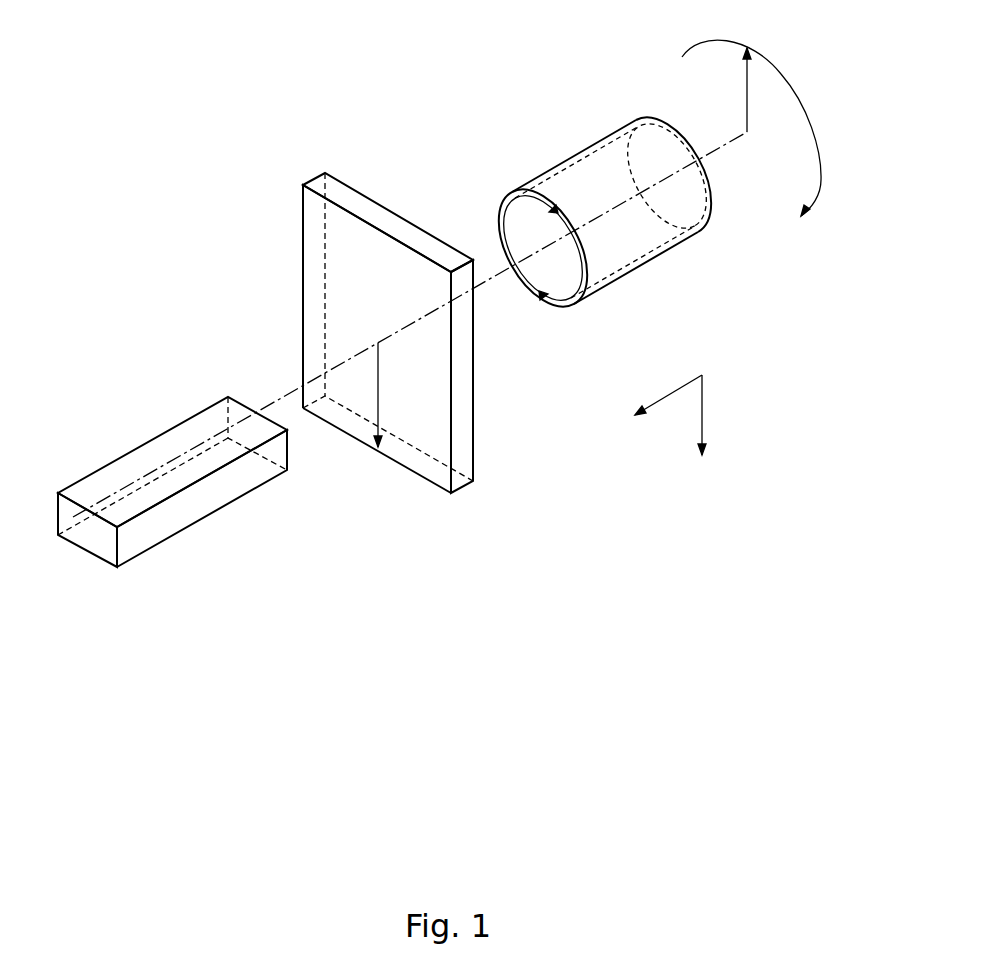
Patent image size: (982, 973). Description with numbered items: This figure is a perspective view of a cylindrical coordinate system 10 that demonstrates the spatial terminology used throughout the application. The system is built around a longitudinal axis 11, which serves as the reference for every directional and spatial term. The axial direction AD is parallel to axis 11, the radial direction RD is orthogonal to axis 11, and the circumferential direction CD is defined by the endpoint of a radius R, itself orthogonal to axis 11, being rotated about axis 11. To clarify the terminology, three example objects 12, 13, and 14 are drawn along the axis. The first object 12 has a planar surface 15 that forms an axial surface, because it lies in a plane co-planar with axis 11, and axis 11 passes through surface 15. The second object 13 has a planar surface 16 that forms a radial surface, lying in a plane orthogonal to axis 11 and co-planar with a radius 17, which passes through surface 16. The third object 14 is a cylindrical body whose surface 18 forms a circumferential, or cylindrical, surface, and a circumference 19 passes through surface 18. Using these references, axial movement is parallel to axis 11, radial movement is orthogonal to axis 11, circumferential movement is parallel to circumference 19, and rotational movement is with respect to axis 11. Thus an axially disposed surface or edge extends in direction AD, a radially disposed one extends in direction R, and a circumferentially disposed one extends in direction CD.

The cylindrical coordinate system 10 is at (262, 220).
The longitudinal axis 11 is at (683, 160).
The object 12 is at (142, 558).
The object 13 is at (480, 483).
The object 14 is at (622, 278).
The axial surface 15 is at (135, 463).
The radial surface 16 is at (317, 295).
The radius 17 is at (378, 390).
The circumferential surface 18 is at (568, 158).
The circumference 19 is at (500, 215).
The radius R is at (747, 82).
The circumferential direction CD is at (781, 74).
The axial direction AD is at (669, 393).
The radial direction RD is at (706, 411).